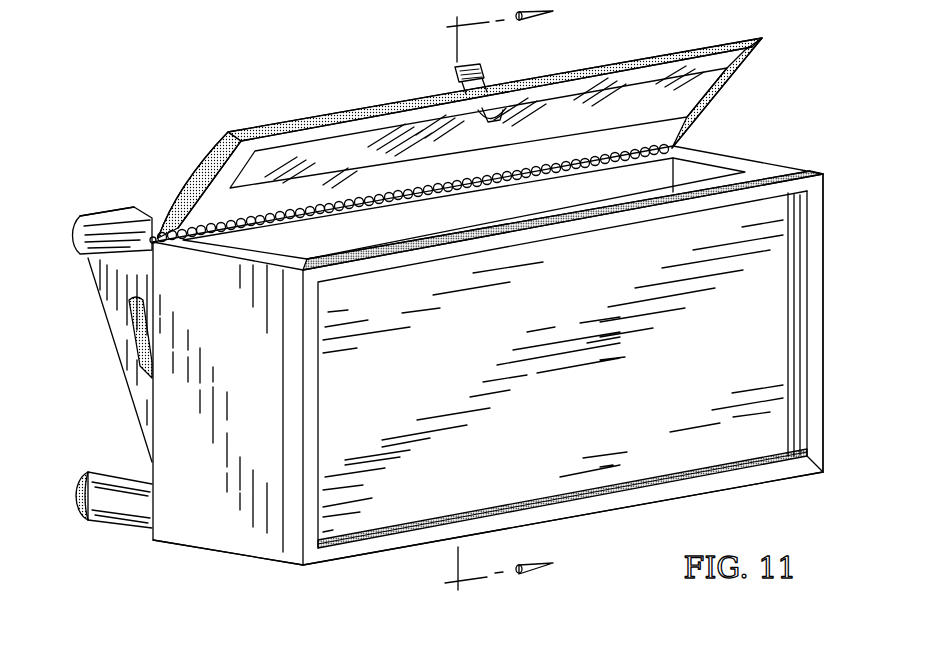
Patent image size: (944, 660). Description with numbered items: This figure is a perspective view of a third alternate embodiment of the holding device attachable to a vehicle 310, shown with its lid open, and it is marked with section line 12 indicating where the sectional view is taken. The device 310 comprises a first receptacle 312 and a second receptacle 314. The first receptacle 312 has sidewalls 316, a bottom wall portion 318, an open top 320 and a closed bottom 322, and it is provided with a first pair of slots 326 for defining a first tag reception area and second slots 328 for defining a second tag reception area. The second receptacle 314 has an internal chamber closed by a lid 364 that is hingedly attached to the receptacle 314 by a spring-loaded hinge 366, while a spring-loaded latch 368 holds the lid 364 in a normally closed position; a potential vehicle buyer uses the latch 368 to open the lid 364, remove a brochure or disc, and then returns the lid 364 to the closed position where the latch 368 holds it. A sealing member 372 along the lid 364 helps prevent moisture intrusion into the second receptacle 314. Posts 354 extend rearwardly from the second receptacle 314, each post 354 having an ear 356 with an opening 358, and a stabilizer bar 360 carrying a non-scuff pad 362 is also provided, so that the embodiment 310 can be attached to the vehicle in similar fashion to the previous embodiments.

The holding device attachable to a vehicle 310 is at (260, 78).
The first receptacle 312 is at (370, 551).
The second receptacle 314 is at (216, 551).
The sidewalls 316 is at (812, 255).
The bottom wall portion 318 is at (785, 473).
The open top 320 is at (806, 172).
The closed bottom 322 is at (613, 515).
The first pair of slots 326 is at (802, 420).
The second slots 328 is at (800, 345).
The posts 354 is at (68, 228).
The ear 356 is at (110, 210).
The opening 358 is at (152, 235).
The stabilizer bar 360 is at (110, 518).
The non-scuff pad 362 is at (80, 480).
The lid 364 is at (762, 42).
The spring-loaded hinge 366 is at (695, 146).
The spring-loaded latch 368 is at (452, 78).
The sealing member 372 is at (663, 68).
The section line 12- 12 is at (517, 295).